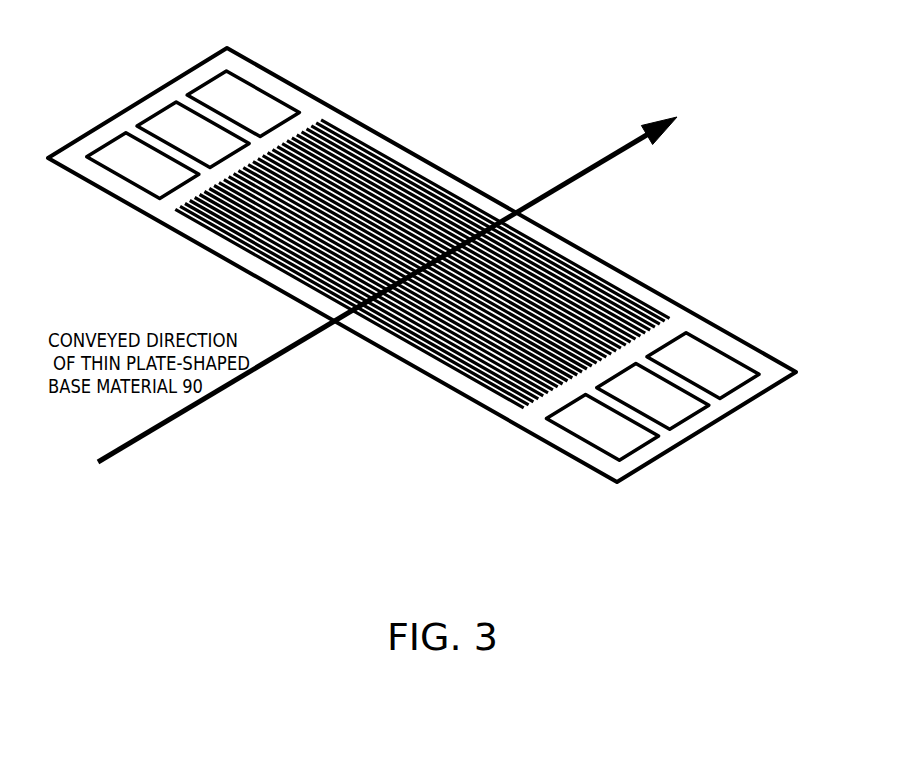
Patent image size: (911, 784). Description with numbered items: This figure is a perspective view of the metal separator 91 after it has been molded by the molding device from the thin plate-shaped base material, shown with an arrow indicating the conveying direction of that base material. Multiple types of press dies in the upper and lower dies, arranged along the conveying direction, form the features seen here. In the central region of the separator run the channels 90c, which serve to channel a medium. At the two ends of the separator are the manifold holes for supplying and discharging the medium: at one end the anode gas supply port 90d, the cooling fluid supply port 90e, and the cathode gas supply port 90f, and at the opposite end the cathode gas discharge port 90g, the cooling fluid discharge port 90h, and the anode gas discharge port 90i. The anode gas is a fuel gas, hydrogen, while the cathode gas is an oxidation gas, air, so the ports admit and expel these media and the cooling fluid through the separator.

The metal separator 91 is at (49, 40).
The channels 90c is at (557, 243).
The anode gas supply port 90d is at (635, 453).
The cooling fluid supply port 90e is at (687, 422).
The cathode gas supply port 90f is at (740, 392).
The cathode gas discharge port 90g is at (117, 135).
The cooling fluid discharge port 90h is at (165, 108).
The anode gas discharge port 90i is at (217, 75).